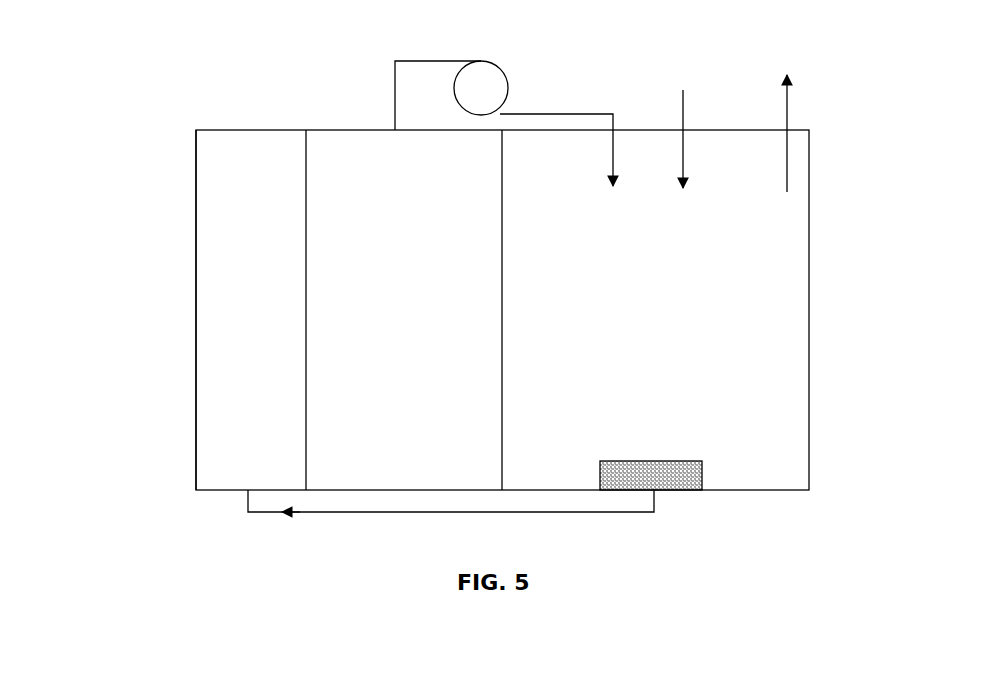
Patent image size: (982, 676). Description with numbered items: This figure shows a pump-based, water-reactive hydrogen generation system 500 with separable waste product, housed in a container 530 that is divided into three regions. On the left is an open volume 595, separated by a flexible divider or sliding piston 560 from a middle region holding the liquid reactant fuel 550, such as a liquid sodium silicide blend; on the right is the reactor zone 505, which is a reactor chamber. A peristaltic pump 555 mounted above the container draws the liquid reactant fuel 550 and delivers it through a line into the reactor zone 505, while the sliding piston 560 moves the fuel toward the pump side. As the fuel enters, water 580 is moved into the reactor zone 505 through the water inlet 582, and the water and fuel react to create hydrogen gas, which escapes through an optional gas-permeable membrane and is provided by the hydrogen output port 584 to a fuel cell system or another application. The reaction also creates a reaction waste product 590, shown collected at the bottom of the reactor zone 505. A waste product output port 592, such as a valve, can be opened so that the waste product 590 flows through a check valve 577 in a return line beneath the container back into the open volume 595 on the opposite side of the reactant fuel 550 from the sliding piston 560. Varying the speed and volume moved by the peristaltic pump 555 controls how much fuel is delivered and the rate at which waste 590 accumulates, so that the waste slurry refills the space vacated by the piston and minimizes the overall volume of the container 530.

The hydrogen generation system 500 is at (144, 53).
The container 530 is at (194, 128).
The open volume 595 is at (207, 424).
The sliding piston 560 is at (306, 320).
The liquid reactant fuel 550 is at (442, 310).
The reactor zone 505 is at (671, 357).
The peristaltic pump 555 is at (497, 66).
The water 580 is at (688, 83).
The water inlet 582 is at (684, 120).
The hydrogen output port 584 is at (788, 118).
The check valve 577 is at (273, 533).
The reaction waste product 590 is at (688, 482).
The waste product output port 592 is at (654, 500).